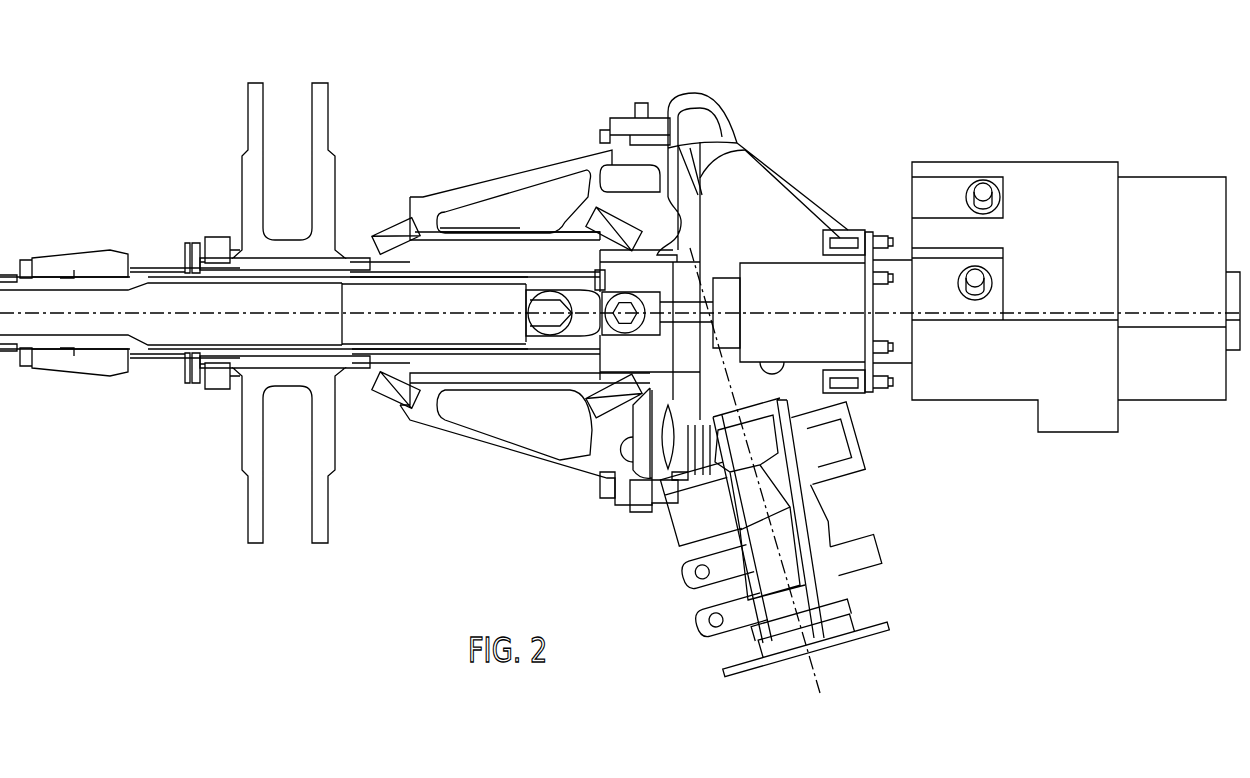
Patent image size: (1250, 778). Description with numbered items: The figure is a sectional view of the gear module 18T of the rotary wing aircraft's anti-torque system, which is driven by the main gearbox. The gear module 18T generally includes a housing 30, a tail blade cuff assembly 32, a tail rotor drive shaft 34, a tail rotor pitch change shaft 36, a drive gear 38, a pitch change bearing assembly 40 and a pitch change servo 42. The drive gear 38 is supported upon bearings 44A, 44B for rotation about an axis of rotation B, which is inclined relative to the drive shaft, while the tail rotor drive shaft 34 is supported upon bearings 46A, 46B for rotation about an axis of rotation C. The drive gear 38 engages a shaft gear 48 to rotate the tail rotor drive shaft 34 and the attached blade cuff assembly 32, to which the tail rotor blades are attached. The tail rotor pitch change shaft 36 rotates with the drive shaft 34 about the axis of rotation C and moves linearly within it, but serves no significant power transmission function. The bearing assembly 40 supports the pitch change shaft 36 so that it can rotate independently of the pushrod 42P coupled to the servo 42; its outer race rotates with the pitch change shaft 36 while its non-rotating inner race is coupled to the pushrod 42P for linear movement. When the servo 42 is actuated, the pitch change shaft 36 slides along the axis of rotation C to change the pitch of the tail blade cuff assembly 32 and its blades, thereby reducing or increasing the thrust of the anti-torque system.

The gear module 18T is at (727, 100).
The housing 30 is at (785, 180).
The tail blade cuff assembly 32 is at (330, 122).
The tail rotor drive shaft 34 is at (322, 357).
The tail rotor pitch change shaft 36 is at (163, 345).
The drive gear 38 is at (793, 440).
The pitch change bearing assembly 40 is at (575, 352).
The pitch change servo 42 is at (1028, 192).
The pushrod 42P is at (643, 290).
The bearing 44A is at (747, 590).
The bearing 44B is at (683, 507).
The bearing 46A is at (615, 230).
The bearing 46B is at (400, 238).
The shaft gear 48 is at (697, 175).
The axis of rotation B is at (817, 670).
The axis of rotation C is at (52, 312).